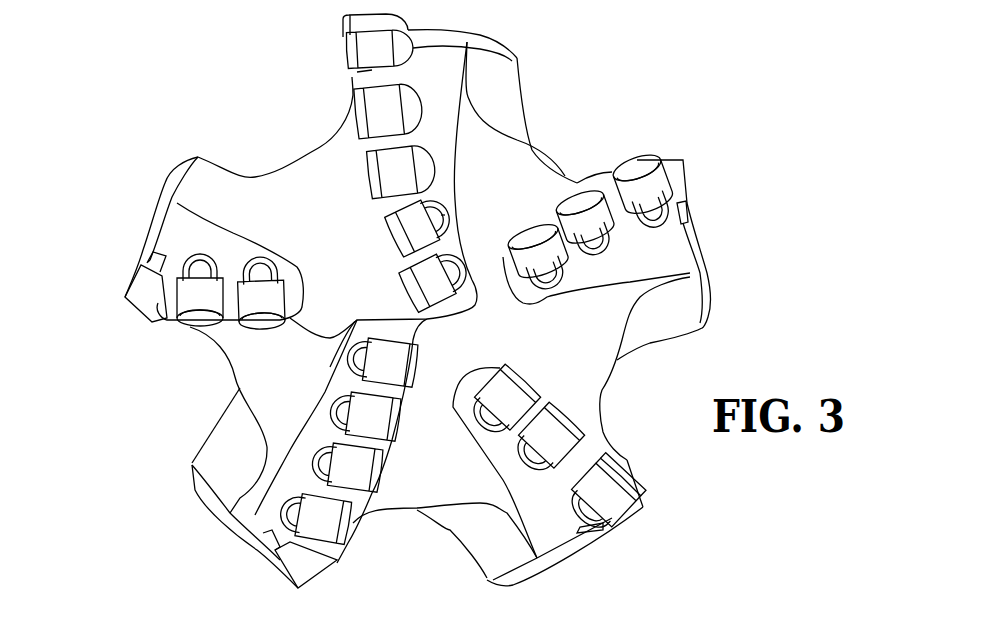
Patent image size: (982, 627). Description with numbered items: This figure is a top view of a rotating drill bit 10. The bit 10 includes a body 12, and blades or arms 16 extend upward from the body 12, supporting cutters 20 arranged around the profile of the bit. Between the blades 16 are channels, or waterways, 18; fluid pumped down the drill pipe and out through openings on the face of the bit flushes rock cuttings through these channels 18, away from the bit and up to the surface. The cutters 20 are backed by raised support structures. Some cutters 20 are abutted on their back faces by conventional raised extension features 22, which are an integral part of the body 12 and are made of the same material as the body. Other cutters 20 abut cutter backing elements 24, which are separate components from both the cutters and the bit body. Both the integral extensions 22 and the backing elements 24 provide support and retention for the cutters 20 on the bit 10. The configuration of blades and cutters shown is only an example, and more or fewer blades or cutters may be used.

The drill bit 10 is at (598, 85).
The body 12 is at (468, 360).
The blades 16 is at (473, 21).
The channels 18 is at (317, 180).
The cutters 20 is at (343, 57).
The raised extension features 22 is at (447, 215).
The cutter backing elements 24 is at (430, 163).